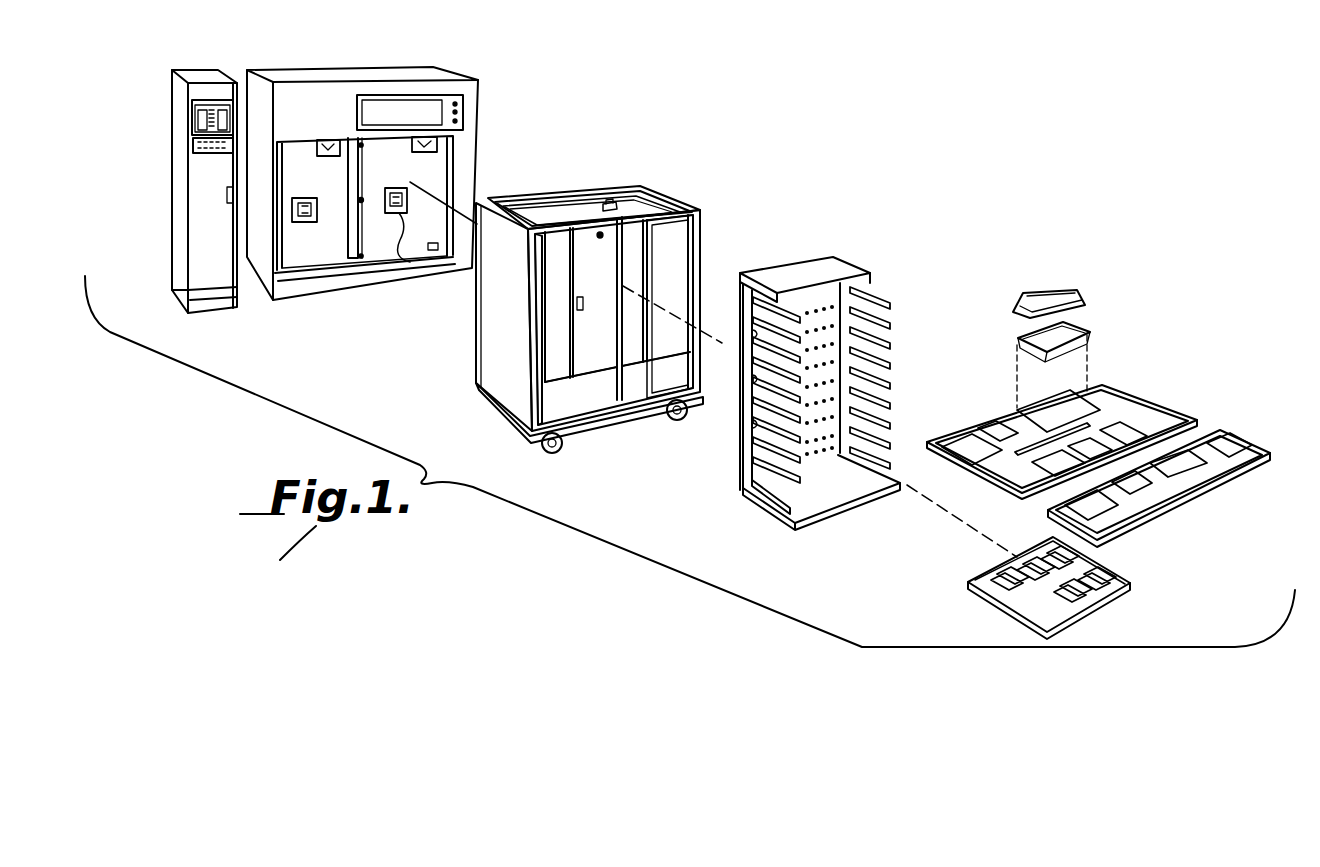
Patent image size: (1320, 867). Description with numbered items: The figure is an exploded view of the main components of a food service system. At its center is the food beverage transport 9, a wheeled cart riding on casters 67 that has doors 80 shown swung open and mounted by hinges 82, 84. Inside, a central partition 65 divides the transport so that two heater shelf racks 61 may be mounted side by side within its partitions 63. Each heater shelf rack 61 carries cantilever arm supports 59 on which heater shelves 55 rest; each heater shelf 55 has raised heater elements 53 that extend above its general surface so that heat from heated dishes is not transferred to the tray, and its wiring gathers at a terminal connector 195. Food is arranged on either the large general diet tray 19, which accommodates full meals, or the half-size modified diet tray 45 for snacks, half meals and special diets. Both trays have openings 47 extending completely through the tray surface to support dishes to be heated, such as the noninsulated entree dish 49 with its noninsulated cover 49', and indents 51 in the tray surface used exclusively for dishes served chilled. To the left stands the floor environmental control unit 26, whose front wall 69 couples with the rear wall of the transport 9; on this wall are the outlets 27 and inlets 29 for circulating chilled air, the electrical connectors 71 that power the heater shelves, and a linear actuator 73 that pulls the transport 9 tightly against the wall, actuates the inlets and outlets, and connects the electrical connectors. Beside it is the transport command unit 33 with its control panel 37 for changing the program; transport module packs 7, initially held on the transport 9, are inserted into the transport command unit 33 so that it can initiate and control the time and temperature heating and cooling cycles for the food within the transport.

The transport module pack 7 is at (204, 118).
The food beverage transport 9 is at (690, 206).
The general diet tray 19 is at (1175, 407).
The floor environmental control unit 26 is at (478, 108).
The outlets 27 is at (357, 237).
The inlets 29 is at (340, 156).
The transport command unit 33 is at (178, 229).
The control panel 37 is at (198, 152).
The modified diet tray 45 is at (1262, 450).
The openings 47 is at (997, 432).
The entree dish 49 is at (1081, 359).
The cover 49' is at (1079, 287).
The indents 51 is at (1053, 462).
The heater elements 53 is at (1058, 567).
The heater shelf 55 is at (1095, 598).
The cantilever arm supports 59 is at (878, 405).
The heater shelf rack 61 is at (885, 298).
The partitions 63 is at (678, 257).
The central partition 65 is at (610, 380).
The casters 67 is at (560, 452).
The front wall 69 is at (316, 262).
The electrical connectors 71 is at (410, 262).
The linear actuator 73 is at (364, 199).
The doors 80 is at (522, 315).
The hinge 82 is at (477, 385).
The hinge 84 is at (576, 178).
The terminal connector 195 is at (976, 573).